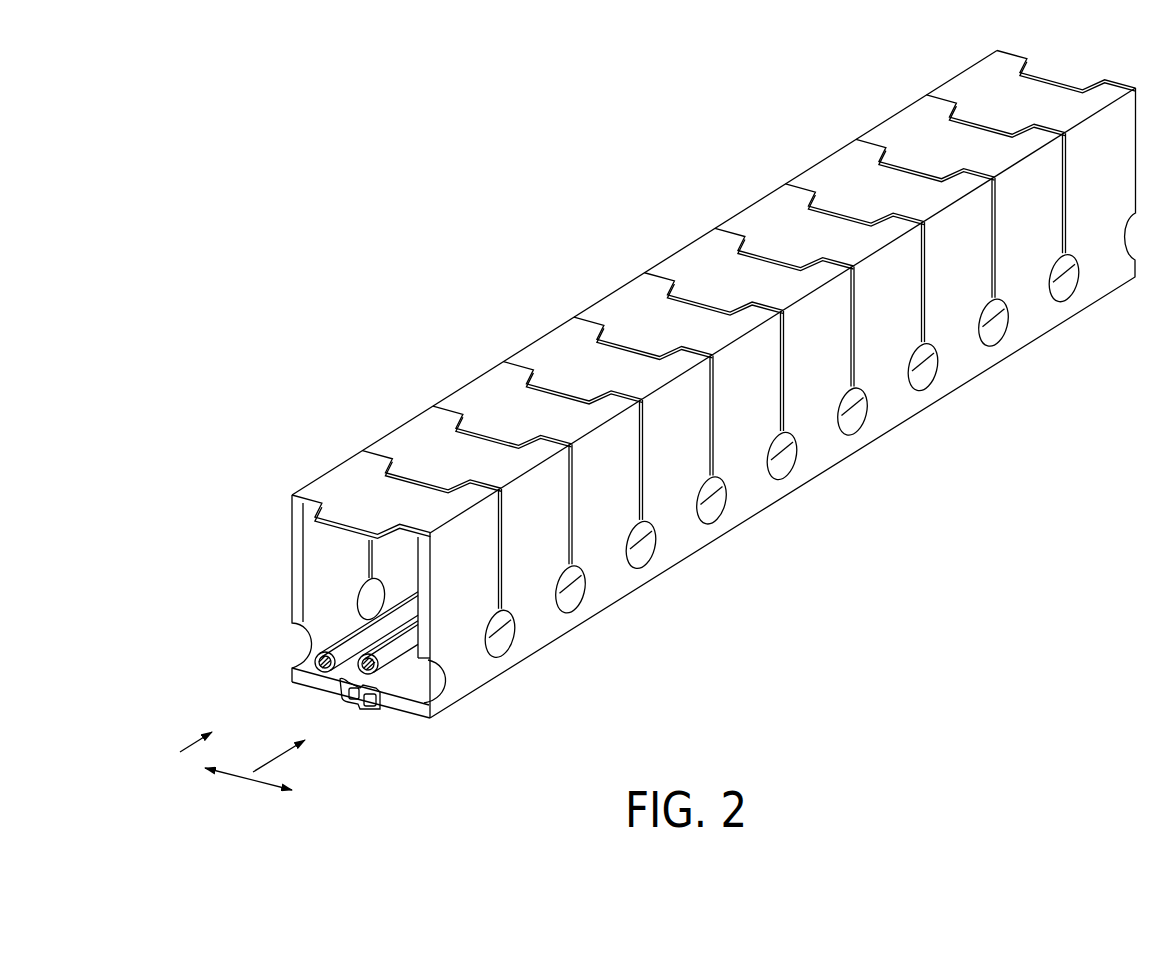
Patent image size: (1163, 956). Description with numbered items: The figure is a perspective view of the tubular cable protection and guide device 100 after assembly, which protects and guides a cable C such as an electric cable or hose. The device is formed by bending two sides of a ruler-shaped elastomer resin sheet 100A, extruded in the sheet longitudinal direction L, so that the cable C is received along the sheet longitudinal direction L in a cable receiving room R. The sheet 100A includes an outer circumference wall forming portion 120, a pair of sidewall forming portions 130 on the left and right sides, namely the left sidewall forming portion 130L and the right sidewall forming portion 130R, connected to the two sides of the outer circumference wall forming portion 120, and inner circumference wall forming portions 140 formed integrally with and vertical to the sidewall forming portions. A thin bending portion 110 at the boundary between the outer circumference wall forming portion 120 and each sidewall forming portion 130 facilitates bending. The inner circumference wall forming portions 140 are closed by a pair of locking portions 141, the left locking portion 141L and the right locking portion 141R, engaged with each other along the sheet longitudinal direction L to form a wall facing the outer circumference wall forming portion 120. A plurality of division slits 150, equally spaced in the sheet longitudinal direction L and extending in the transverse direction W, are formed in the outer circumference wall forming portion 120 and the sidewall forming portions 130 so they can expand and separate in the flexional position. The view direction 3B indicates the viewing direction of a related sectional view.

The tubular cable protection and guide device 100 is at (452, 122).
The elastomer resin sheet 100A is at (837, 167).
The bending portion 110 is at (463, 512).
The outer circumference wall forming portion 120 is at (662, 382).
The sidewall forming portion 130 is at (657, 403).
The left sidewall forming portion 130L is at (290, 497).
The right sidewall forming portion 130R is at (716, 354).
The inner circumference wall forming portion 140 is at (428, 732).
The locking portion 141 is at (372, 711).
The left locking portion 141L is at (333, 700).
The right locking portion 141R is at (441, 697).
The division slit 150 is at (772, 257).
The cable receiving room R is at (467, 637).
The cable C is at (422, 664).
The sheet longitudinal direction L is at (279, 752).
The transverse direction W is at (248, 788).
The view direction 3B is at (181, 752).